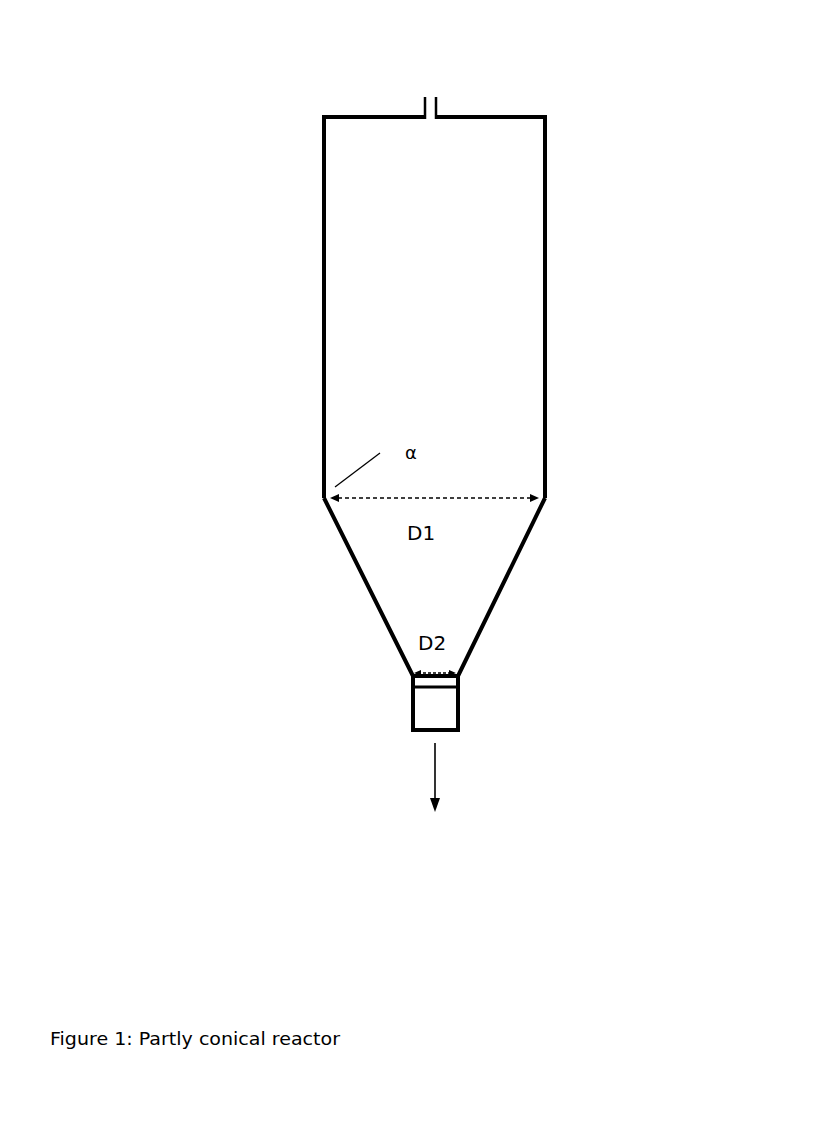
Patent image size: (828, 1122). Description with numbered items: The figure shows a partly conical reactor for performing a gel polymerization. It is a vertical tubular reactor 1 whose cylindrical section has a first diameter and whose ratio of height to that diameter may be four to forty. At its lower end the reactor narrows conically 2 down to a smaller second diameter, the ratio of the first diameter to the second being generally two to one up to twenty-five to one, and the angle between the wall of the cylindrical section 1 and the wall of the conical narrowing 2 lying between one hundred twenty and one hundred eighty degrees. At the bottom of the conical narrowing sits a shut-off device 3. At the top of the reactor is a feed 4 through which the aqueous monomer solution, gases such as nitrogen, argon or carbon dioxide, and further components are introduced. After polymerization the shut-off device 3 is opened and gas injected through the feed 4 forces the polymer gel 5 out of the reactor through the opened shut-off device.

The vertical tubular reactor 1 is at (557, 263).
The conical narrowing 2 is at (525, 575).
The shut-off device 3 is at (468, 730).
The feed 4 is at (431, 88).
The polymer gel 5 is at (440, 798).